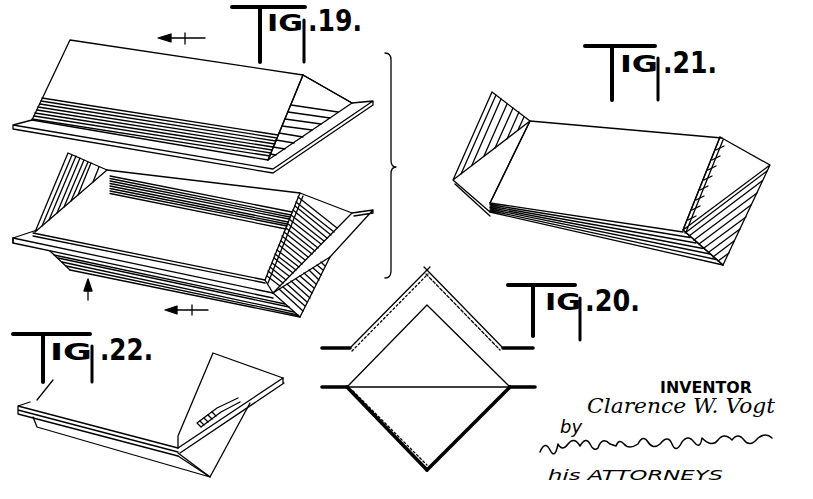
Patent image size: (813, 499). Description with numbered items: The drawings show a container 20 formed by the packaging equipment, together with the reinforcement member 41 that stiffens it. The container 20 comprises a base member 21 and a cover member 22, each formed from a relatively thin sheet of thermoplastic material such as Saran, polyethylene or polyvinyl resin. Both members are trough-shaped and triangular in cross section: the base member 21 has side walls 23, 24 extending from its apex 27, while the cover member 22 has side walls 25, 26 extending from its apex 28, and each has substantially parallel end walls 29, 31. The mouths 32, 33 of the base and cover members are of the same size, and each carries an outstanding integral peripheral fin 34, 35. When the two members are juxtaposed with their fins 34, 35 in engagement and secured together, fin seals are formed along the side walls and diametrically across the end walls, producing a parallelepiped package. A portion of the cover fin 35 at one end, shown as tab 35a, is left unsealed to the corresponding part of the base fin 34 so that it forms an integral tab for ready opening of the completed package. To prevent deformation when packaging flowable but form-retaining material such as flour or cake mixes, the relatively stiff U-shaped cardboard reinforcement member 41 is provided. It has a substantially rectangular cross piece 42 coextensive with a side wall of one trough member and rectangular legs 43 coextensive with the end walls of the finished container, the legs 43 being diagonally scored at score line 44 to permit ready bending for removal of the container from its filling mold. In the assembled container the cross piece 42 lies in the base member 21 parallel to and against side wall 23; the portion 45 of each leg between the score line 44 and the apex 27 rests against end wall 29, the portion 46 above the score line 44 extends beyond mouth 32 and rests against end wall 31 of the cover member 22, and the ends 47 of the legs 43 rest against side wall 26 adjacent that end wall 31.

In FIG. 19, the container 20 is at (132, 175).
In FIG. 22, the container 20 is at (165, 345).
In FIG. 19, the base member 21 is at (258, 304).
In FIG. 19, the cover member 22 is at (310, 84).
In FIG. 20, the side wall 23 is at (372, 408).
In FIG. 19, the side wall 24 is at (262, 192).
In FIG. 20, the side wall 24 is at (472, 430).
In FIG. 20, the side wall 25 is at (395, 303).
In FIG. 20, the side wall 26 is at (467, 300).
In FIG. 19, the apex 27 is at (130, 283).
In FIG. 20, the apex 27 is at (425, 470).
In FIG. 19, the apex 28 is at (121, 48).
In FIG. 20, the apex 28 is at (428, 270).
In FIG. 19, the end wall 29 is at (308, 296).
In FIG. 22, the end wall 29 is at (217, 455).
In FIG. 19, the end wall 31 is at (317, 112).
In FIG. 22, the end wall 31 is at (223, 373).
In FIG. 20, the mouth 32 is at (435, 385).
In FIG. 20, the mouth 33 is at (350, 358).
In FIG. 19, the peripheral fin 34 is at (72, 250).
In FIG. 19, the peripheral fin 35 is at (50, 134).
In FIG. 22, the tab portion of fin 35a is at (213, 403).
In FIG. 21, the end flap 41 is at (555, 119).
In FIG. 19, the cross piece 42 is at (128, 251).
In FIG. 20, the cross piece 42 is at (380, 413).
In FIG. 21, the cross piece 42 is at (647, 153).
In FIG. 21, the legs 43 is at (745, 162).
In FIG. 21, the score line 44 is at (725, 212).
In FIG. 21, the leg portion 45 is at (720, 257).
In FIG. 19, the leg portion 46 is at (305, 228).
In FIG. 21, the leg portion 46 is at (717, 177).
In FIG. 19, the ends of legs 47 is at (313, 193).
In FIG. 20, the ends of legs 47 is at (487, 360).
In FIG. 21, the ends of legs 47 is at (690, 210).